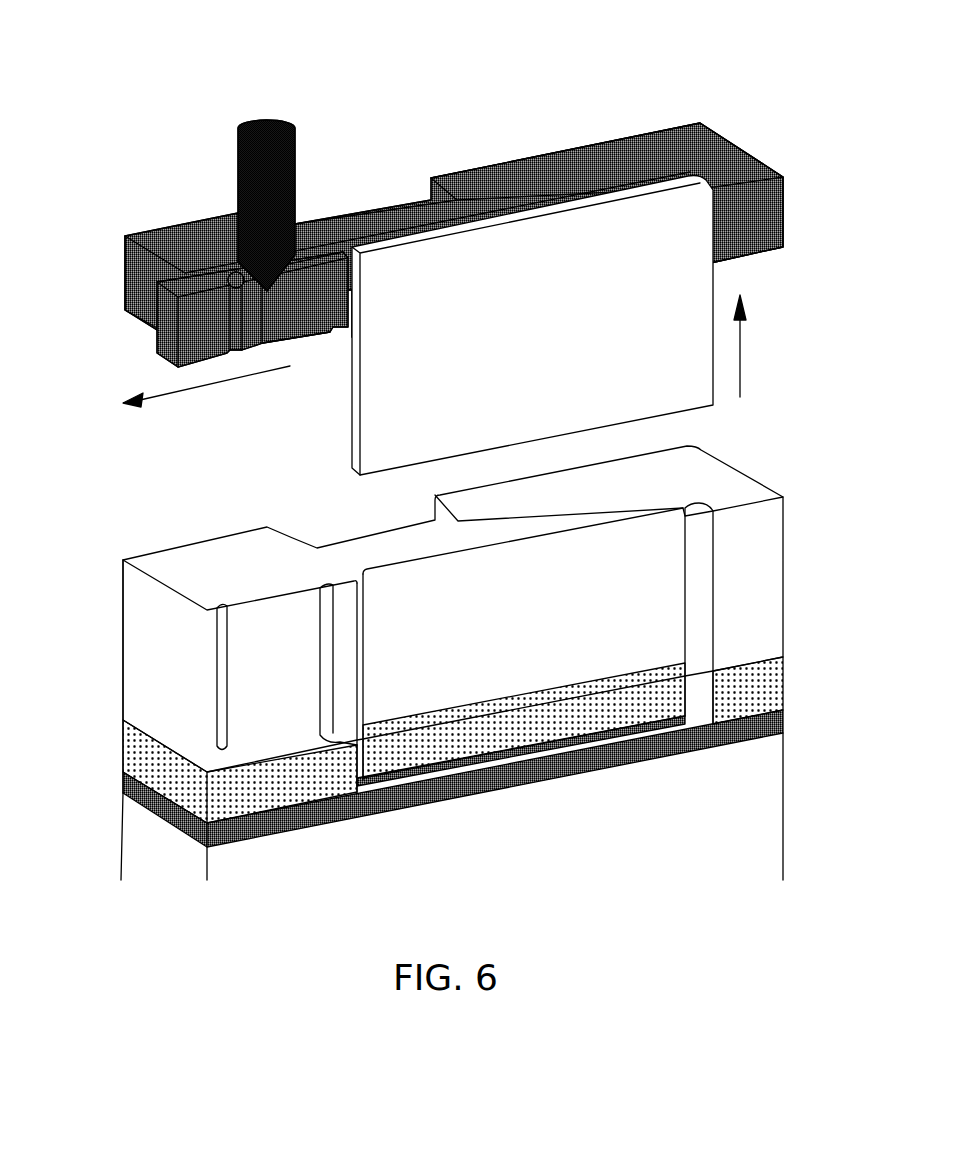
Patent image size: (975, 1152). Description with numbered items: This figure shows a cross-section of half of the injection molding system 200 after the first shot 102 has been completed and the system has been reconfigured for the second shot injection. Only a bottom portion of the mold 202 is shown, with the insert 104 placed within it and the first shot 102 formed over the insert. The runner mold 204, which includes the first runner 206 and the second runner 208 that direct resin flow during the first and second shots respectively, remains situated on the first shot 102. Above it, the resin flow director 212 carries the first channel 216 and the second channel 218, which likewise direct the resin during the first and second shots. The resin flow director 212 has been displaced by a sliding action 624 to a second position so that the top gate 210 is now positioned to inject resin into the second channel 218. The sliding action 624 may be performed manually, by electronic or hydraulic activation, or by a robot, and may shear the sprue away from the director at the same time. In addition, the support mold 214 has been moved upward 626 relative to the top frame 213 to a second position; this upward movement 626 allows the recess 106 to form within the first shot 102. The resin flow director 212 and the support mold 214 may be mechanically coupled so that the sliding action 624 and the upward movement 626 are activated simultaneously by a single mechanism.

The injection molding system 200 is at (126, 52).
The mold 202 is at (582, 842).
The runner mold 204 is at (120, 650).
The first runner 206 is at (215, 683).
The second runner 208 is at (322, 683).
The top gate 210 is at (303, 165).
The resin flow director 212 is at (157, 338).
The top frame 213 is at (740, 144).
The support mold 214 is at (582, 352).
The first channel 216 is at (227, 325).
The second channel 218 is at (282, 320).
The first shot 102 is at (120, 748).
The insert 104 is at (120, 790).
The recess 106 is at (580, 731).
The sliding action 624 is at (206, 391).
The upward movement 626 is at (768, 346).